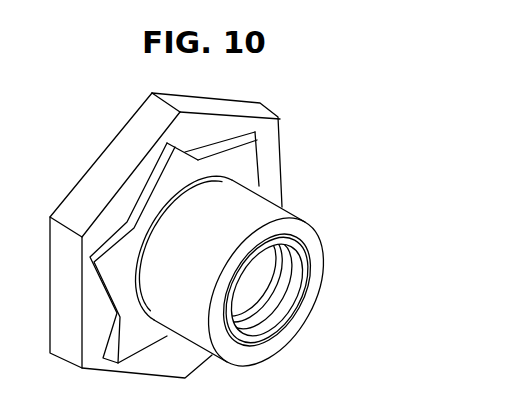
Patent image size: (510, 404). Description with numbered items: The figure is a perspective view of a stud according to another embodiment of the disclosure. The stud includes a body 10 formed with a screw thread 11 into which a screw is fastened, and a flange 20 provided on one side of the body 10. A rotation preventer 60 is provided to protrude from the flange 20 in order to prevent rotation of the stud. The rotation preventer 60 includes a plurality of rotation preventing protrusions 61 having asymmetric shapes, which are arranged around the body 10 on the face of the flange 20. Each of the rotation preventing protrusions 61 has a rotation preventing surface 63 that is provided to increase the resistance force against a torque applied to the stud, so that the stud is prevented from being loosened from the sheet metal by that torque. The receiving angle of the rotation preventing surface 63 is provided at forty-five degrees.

The body 10 is at (257, 208).
The screw thread 11 is at (303, 273).
The flange 20 is at (226, 128).
The rotation preventer 60 is at (260, 140).
The rotation preventing protrusion 61 is at (261, 163).
The rotation preventing surface 63 is at (193, 153).